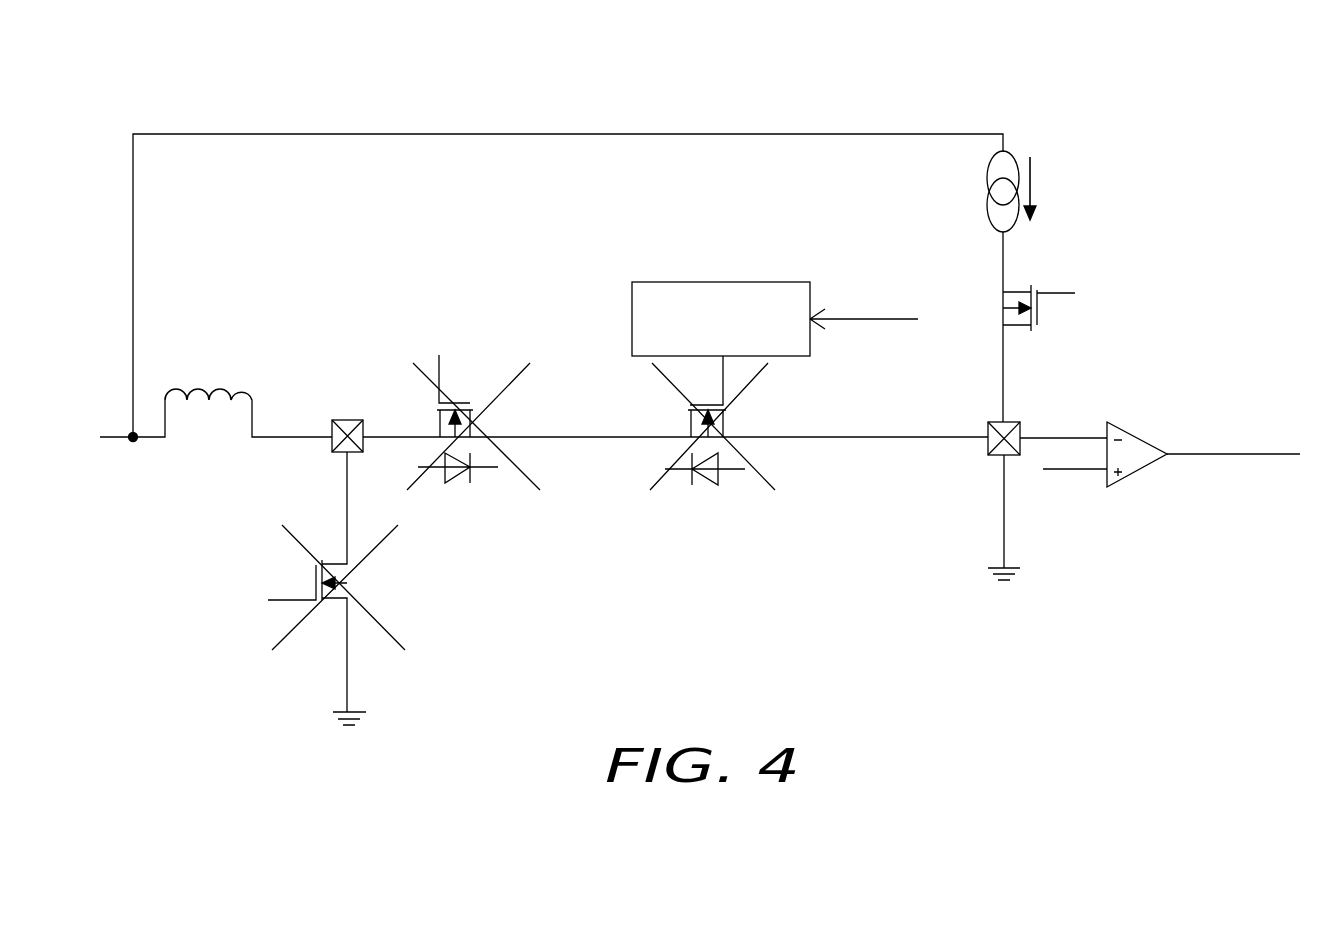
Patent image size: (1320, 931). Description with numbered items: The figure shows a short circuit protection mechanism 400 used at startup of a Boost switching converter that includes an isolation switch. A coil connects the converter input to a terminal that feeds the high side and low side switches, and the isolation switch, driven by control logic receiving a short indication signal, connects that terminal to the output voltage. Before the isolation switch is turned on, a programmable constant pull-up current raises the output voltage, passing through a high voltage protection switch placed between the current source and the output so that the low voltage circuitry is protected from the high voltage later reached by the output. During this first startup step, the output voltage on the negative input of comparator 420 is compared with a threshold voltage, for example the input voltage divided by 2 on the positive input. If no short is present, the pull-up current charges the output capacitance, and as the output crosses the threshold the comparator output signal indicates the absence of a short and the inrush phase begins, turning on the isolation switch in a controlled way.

The short circuit protection mechanism 400 is at (334, 78).
The comparator 420 is at (1142, 436).
The Vin/2 reference input 2 is at (1073, 483).